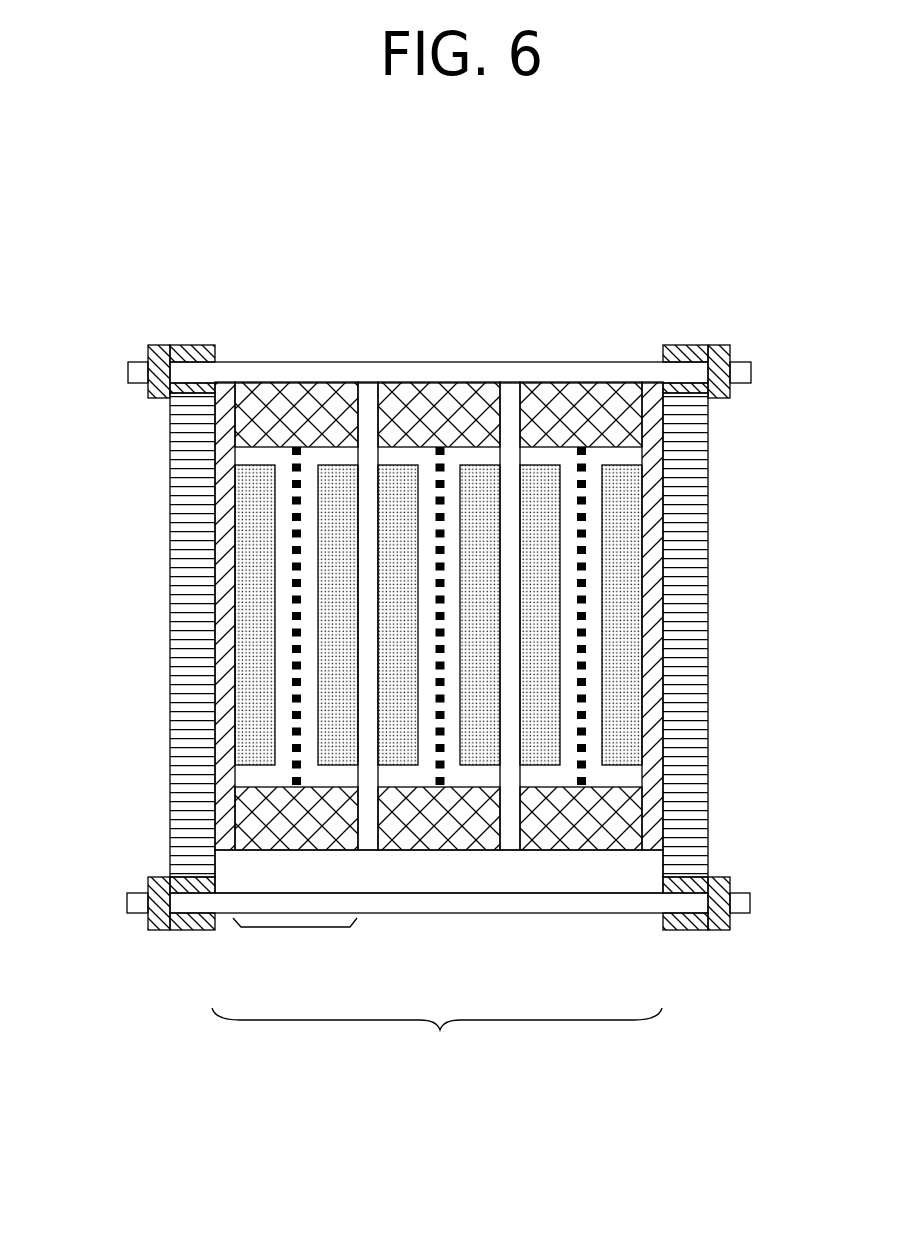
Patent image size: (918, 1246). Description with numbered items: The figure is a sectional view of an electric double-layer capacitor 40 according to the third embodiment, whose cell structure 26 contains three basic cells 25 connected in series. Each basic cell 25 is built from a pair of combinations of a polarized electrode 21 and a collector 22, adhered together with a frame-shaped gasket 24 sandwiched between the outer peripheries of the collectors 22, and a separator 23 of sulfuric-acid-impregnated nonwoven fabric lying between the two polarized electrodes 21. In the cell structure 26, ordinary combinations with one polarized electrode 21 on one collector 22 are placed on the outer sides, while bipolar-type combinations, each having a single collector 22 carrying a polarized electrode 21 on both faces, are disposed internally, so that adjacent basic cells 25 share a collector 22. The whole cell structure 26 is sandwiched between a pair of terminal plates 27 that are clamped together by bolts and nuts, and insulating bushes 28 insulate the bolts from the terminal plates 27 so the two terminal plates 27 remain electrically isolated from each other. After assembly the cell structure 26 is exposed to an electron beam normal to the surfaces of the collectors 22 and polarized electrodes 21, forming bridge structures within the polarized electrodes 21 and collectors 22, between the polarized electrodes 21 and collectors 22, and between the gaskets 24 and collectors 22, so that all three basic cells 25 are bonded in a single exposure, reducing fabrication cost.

The polarized electrode 21 is at (250, 515).
The collector 22 is at (222, 578).
The separator 23 is at (293, 768).
The gasket 24 is at (305, 400).
The basic cell 25 is at (297, 930).
The cell structure 26 is at (437, 1040).
The terminal plate 27 is at (688, 522).
The insulating bush 28 is at (718, 877).
The electric double layer capacitor 40 is at (610, 254).